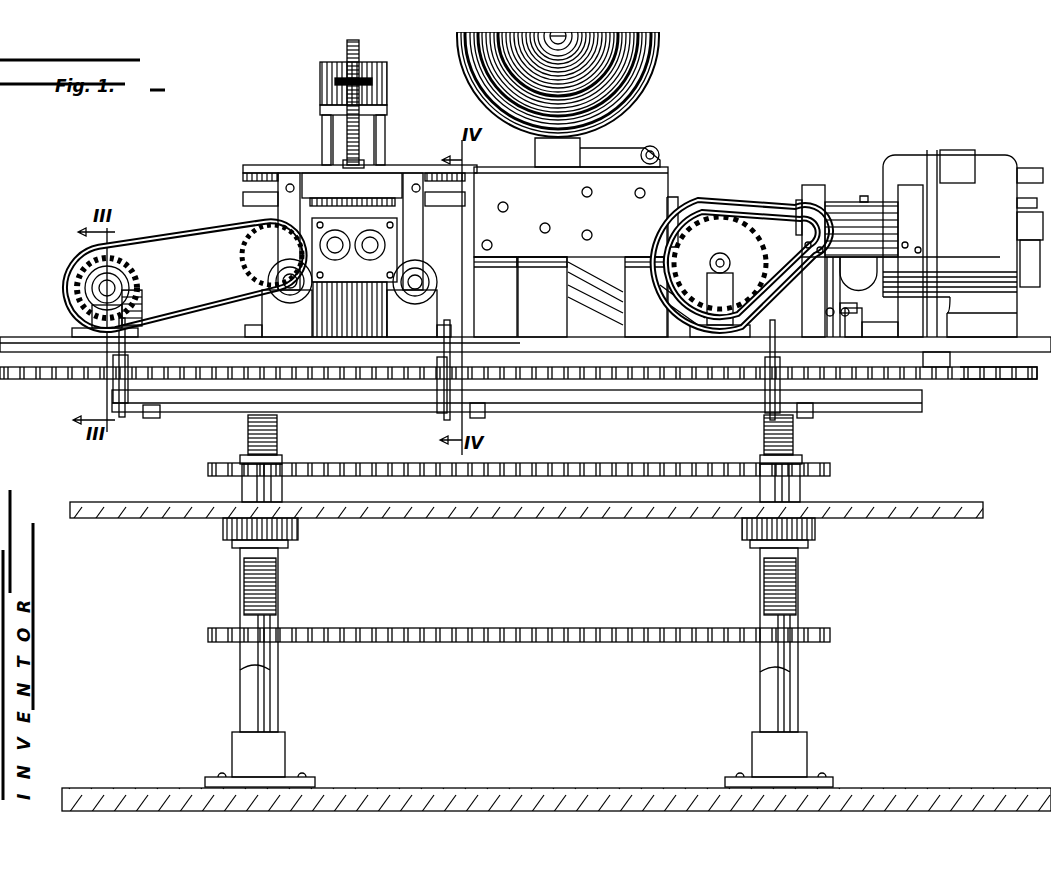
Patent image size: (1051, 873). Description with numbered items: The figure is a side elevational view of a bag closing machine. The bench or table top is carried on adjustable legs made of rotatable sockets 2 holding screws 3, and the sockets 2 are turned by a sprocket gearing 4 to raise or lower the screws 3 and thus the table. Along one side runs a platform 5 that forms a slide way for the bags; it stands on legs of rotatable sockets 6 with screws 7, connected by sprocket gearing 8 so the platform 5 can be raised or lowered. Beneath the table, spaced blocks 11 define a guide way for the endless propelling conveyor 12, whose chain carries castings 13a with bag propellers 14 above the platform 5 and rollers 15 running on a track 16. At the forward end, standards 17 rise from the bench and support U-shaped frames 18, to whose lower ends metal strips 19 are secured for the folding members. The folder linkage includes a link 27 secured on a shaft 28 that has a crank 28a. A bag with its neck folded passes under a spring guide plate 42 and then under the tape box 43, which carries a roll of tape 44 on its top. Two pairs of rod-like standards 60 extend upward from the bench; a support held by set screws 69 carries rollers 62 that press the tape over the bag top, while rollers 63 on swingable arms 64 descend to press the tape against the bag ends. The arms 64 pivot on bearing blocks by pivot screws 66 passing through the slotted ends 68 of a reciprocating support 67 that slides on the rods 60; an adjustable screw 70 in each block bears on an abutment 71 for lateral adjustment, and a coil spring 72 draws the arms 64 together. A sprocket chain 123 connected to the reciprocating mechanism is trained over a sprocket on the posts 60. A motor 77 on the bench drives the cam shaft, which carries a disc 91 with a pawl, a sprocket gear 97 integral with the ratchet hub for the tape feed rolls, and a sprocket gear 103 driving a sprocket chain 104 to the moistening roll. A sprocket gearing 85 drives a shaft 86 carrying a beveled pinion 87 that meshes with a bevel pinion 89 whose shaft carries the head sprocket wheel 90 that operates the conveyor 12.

The rotatable socket 2 is at (246, 487).
The screw 3 is at (278, 432).
The sprocket gearing 4 is at (545, 472).
The platform 5 is at (950, 508).
The rotatable socket 6 is at (270, 690).
The screw 7 is at (275, 585).
The sprocket gearing 8 is at (473, 632).
The spaced block 11 is at (200, 350).
The propelling conveyor 12 is at (605, 380).
The casting 13a is at (123, 418).
The bag propeller 14 is at (113, 383).
The roller 15 is at (152, 418).
The track 16 is at (345, 404).
The standard 17 is at (790, 308).
The U-shaped frame 18 is at (810, 195).
The metal strip 19 is at (840, 245).
The link 27 is at (937, 300).
The shaft 28 is at (875, 337).
The crank 28a is at (848, 306).
The spring guide plate 42 is at (718, 258).
The tape box 43 is at (645, 182).
The roll of tape 44 is at (715, 67).
The rod-like standard 60 is at (322, 125).
The roller 62 is at (385, 258).
The roller 63 is at (268, 282).
The swingable arm 64 is at (290, 218).
The pivot screw 66 is at (291, 185).
The reciprocating support 67 is at (385, 176).
The slotted end 68 is at (258, 178).
The set screw 69 is at (278, 192).
The adjustable screw 70 is at (257, 165).
The abutment 71 is at (357, 160).
The coil spring 72 is at (338, 200).
The motor 77 is at (972, 172).
The chain 85 is at (158, 238).
The shaft 86 is at (100, 288).
The beveled pinion 87 is at (123, 272).
The bevel pinion 89 is at (135, 310).
The head sprocket wheel 90 is at (18, 380).
The disc 91 is at (992, 381).
The sprocket gear 97 is at (716, 267).
The sprocket gear 103 is at (742, 220).
The sprocket chain 104 is at (692, 205).
The sprocket chain 123 is at (348, 88).